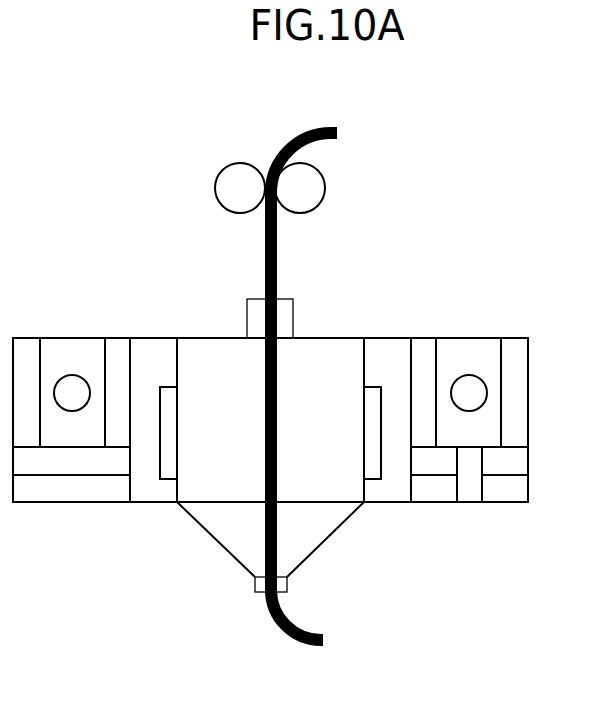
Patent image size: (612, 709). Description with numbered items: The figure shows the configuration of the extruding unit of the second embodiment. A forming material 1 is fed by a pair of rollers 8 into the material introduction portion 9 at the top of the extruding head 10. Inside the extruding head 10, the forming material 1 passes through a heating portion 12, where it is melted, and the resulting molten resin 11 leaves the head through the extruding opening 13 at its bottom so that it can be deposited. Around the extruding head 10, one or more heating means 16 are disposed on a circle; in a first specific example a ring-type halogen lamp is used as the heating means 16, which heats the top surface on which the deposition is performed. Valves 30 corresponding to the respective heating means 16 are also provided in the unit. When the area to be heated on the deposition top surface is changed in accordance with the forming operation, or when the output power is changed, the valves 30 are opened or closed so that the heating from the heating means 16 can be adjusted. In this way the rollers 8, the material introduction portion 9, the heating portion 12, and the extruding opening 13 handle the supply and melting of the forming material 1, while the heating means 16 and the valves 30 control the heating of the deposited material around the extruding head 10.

The forming material 1 is at (277, 255).
The rollers 8 is at (325, 188).
The material introduction portion 9 is at (293, 313).
The extruding head 10 is at (310, 382).
The molten resin 11 is at (297, 621).
The heating portion 12 is at (382, 388).
The extruding opening 13 is at (287, 584).
The heating means 16 is at (487, 393).
The valves 30 is at (545, 442).